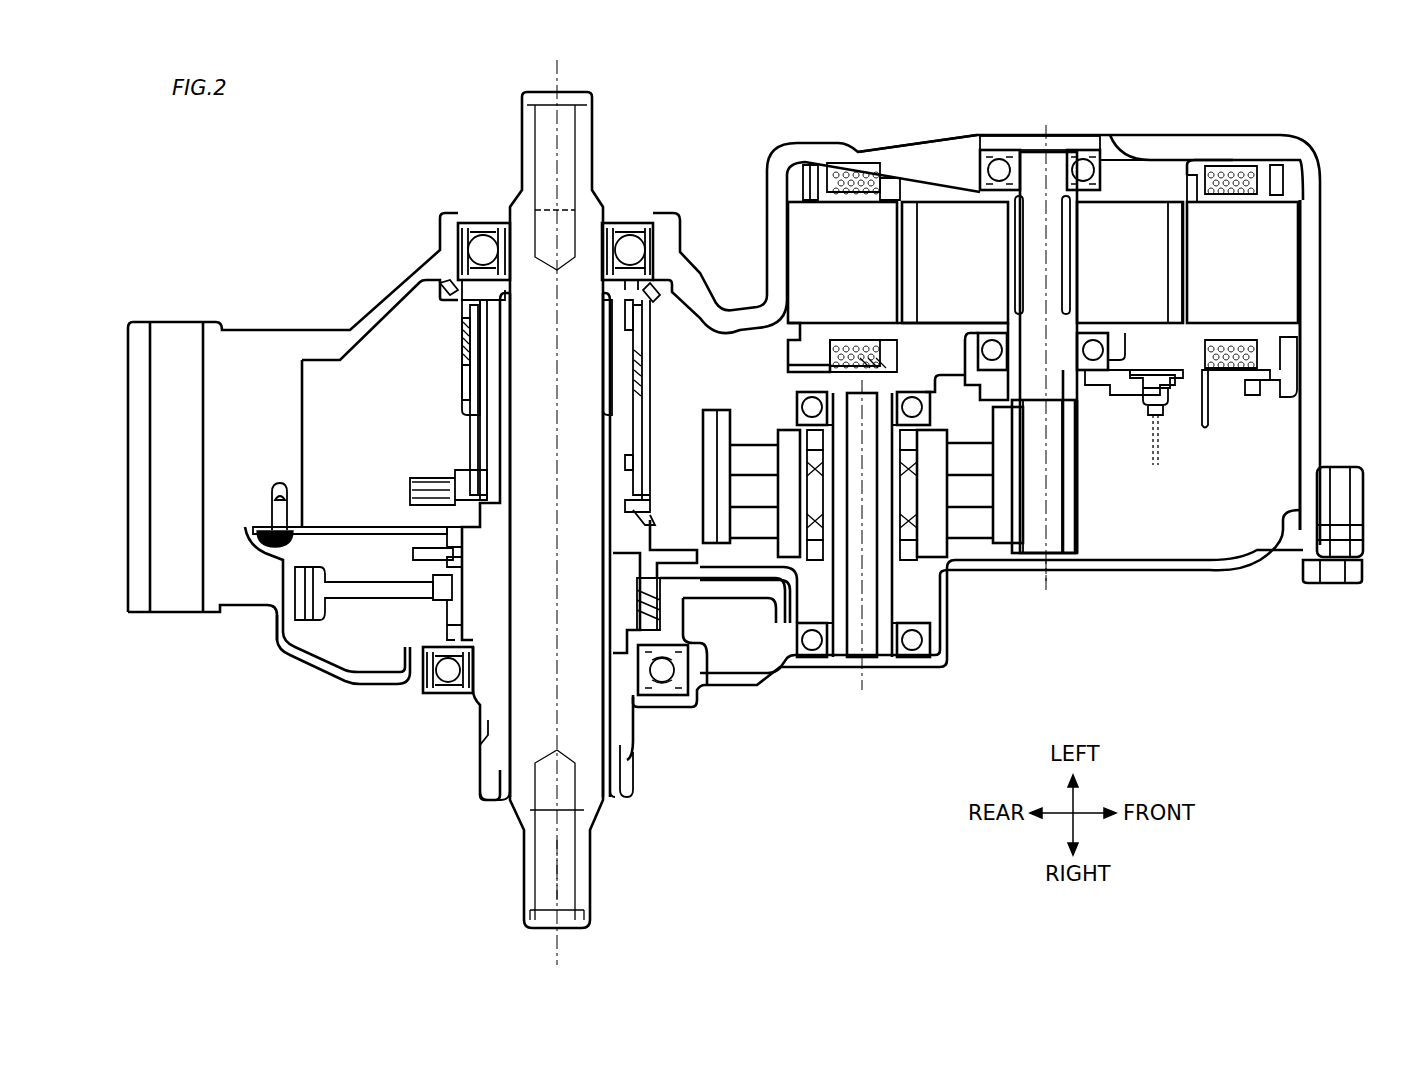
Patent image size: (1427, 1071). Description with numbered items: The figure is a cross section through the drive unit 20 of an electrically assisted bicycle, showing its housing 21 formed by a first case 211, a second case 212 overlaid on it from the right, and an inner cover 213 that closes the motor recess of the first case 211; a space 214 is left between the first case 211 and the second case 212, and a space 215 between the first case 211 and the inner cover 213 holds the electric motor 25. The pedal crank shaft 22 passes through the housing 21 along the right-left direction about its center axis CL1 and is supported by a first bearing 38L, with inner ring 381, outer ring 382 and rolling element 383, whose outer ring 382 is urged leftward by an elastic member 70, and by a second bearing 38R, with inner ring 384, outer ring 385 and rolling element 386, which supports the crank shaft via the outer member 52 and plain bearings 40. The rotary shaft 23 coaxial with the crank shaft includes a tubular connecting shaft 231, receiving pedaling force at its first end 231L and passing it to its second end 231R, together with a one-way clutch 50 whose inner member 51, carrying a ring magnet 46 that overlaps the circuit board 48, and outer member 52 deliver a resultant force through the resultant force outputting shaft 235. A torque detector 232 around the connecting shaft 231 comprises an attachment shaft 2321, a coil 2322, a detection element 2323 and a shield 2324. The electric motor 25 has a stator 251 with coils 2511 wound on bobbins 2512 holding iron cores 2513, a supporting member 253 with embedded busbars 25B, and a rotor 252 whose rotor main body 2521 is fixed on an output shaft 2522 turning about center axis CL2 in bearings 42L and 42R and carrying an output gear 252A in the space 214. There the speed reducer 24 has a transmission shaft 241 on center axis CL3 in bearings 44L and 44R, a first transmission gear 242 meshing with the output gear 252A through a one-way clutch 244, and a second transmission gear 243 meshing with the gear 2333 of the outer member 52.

The drive unit 20 is at (1375, 122).
The housing 21 is at (405, 280).
The first case 211 is at (365, 325).
The second case 212 is at (338, 658).
The inner cover 213 is at (970, 365).
The space 214 is at (352, 512).
The space 215 is at (1170, 190).
The pedal crank shaft 22 is at (595, 835).
The rotary shaft 23 is at (640, 737).
The connecting shaft 231 is at (630, 420).
The first end 231L is at (620, 326).
The second end 231R is at (620, 537).
The torque detector 232 is at (650, 377).
The attachment shaft 2321 is at (460, 330).
The coil 2322 is at (460, 375).
The detection element 2323 is at (460, 408).
The shield 2324 is at (460, 435).
The gear 2333 is at (302, 605).
The resultant force outputting shaft 235 is at (633, 782).
The speed reducer 24 is at (770, 530).
The transmission shaft 241 is at (890, 590).
The first transmission gear 242 is at (1015, 557).
The second transmission gear 243 is at (910, 612).
The one-way clutch 244 is at (817, 487).
The electric motor 25 is at (918, 190).
The busbar 25B is at (1212, 373).
The stator 251 is at (1298, 290).
The coil 2511 is at (1235, 158).
The bobbin 2512 is at (1267, 177).
The iron core 2513 is at (1277, 243).
The rotor 252 is at (948, 202).
The output gear 252A is at (1068, 493).
The rotor main body 2521 is at (1107, 220).
The output shaft 2522 is at (1050, 160).
The supporting member 253 is at (1226, 382).
The inner ring 381 is at (500, 240).
The outer ring 382 is at (464, 250).
The rolling element 383 is at (483, 248).
The inner ring 384 is at (470, 682).
The outer ring 385 is at (425, 700).
The rolling element 386 is at (442, 688).
The first bearing 38L is at (505, 158).
The second bearing 38R is at (470, 771).
The plain bearing 40 is at (613, 697).
The bearing 42L is at (1000, 158).
The bearing 42R is at (1097, 377).
The bearing 44L is at (927, 413).
The bearing 44R is at (930, 637).
The ring magnet 46 is at (425, 558).
The circuit board 48 is at (373, 528).
The one-way clutch 50 is at (378, 620).
The inner member 51 is at (447, 587).
The outer member 52 is at (440, 637).
The elastic member 70 is at (658, 278).
The center axis CL1 is at (557, 863).
The center axis CL2 is at (1046, 573).
The center axis CL3 is at (863, 673).